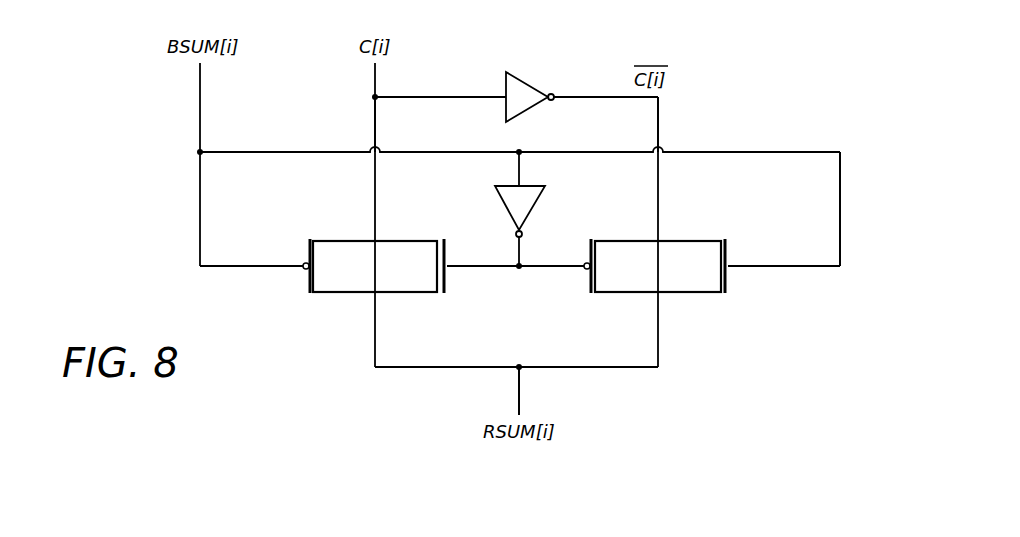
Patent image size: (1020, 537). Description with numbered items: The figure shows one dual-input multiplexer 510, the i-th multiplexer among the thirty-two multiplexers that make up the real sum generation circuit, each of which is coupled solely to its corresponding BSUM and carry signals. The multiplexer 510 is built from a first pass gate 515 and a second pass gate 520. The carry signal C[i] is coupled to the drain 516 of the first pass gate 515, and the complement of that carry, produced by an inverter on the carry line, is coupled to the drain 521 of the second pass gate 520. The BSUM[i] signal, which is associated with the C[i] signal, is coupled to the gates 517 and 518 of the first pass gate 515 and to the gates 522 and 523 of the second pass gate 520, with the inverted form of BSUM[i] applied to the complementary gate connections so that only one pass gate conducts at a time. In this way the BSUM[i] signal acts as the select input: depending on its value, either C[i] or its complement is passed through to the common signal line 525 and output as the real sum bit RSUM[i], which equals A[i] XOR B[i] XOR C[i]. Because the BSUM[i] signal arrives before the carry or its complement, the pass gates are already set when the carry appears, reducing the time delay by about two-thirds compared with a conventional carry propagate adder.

The multiplexer 510 is at (806, 82).
The first pass gate 515 is at (351, 314).
The drain of first pass gate 516 is at (373, 124).
The gate of first pass gate 517 is at (243, 265).
The gate of first pass gate 518 is at (480, 268).
The second pass gate 520 is at (690, 309).
The drain of second pass gate 521 is at (660, 120).
The gate of second pass gate 522 is at (841, 213).
The gate of second pass gate 523 is at (555, 268).
The signal line 525 is at (520, 398).